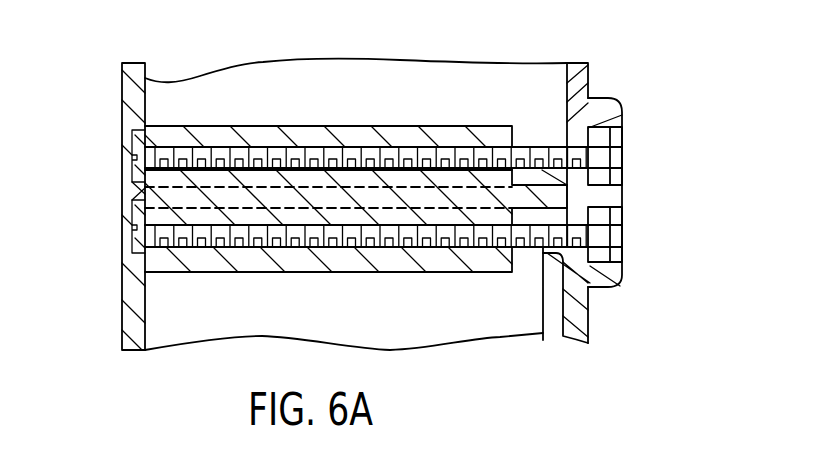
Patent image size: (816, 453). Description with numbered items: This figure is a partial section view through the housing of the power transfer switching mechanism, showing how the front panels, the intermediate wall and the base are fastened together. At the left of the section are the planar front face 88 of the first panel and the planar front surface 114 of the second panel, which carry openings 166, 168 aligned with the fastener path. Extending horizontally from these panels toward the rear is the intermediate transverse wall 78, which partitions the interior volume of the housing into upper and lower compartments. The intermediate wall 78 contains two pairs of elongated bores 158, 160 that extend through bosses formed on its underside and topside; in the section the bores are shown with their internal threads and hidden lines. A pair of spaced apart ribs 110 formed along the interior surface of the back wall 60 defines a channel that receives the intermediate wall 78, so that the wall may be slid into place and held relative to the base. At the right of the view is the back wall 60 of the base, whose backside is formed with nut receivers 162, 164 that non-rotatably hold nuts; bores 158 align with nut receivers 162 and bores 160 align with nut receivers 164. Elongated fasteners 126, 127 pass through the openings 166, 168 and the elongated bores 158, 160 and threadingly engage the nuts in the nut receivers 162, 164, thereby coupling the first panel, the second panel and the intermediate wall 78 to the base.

The back wall 60 is at (590, 77).
The intermediate transverse wall 78 is at (535, 197).
The planar front face 88 is at (123, 105).
The ribs 110 is at (192, 125).
The planar front surface 114 is at (122, 305).
The fasteners 126 is at (527, 249).
The fasteners 127 is at (527, 147).
The elongated bores 158 is at (347, 249).
The elongated bores 160 is at (313, 146).
The nut receivers 162 is at (622, 258).
The nut receivers 164 is at (617, 135).
The openings 166 is at (127, 227).
The openings 168 is at (127, 146).